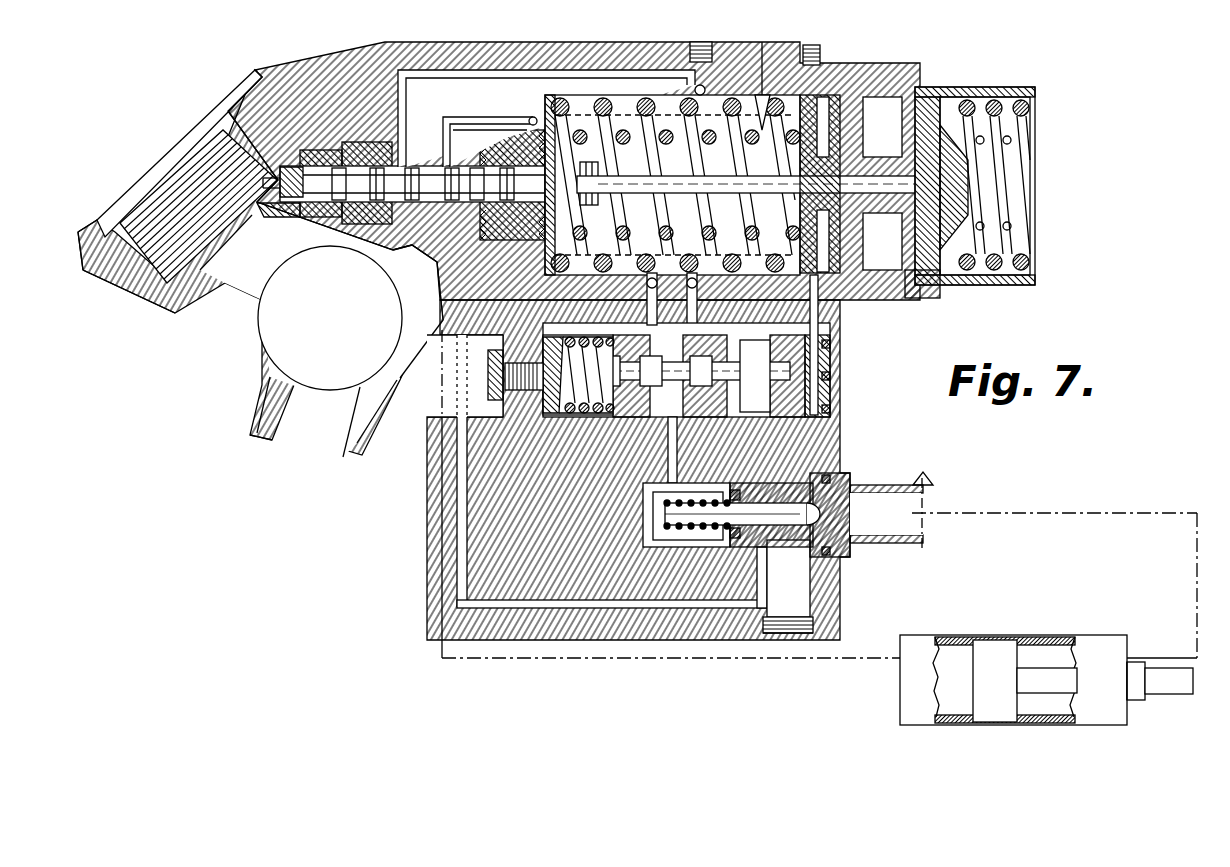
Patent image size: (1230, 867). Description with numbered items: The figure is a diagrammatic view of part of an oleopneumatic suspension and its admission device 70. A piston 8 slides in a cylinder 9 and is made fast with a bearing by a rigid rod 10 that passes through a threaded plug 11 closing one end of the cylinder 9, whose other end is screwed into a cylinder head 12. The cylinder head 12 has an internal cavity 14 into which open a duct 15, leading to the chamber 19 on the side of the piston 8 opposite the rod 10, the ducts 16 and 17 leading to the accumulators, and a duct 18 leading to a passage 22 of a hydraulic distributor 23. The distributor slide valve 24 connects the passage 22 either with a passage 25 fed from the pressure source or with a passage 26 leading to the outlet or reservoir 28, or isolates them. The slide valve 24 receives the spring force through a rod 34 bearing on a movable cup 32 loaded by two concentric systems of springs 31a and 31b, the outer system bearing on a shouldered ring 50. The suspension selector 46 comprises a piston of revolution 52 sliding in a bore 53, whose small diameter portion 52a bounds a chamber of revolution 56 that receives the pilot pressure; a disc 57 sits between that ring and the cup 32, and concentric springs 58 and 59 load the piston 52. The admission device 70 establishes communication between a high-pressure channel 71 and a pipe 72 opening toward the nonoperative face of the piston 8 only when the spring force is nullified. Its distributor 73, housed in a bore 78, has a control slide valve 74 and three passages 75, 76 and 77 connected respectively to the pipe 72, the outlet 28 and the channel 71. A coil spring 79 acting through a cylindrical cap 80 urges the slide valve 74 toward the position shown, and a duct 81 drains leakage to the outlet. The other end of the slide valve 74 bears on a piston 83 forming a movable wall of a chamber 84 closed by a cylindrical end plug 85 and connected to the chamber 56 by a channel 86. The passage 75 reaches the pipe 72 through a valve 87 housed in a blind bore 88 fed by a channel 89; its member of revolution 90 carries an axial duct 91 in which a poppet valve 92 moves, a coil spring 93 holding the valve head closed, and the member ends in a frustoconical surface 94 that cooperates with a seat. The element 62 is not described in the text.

The piston 8 is at (1008, 645).
The cylinder 9 is at (912, 640).
The rigid rod 10 is at (1160, 668).
The threaded plug 11 is at (1140, 690).
The cylinder head 12 is at (560, 536).
The internal cavity 14 is at (275, 330).
The duct 15 is at (412, 305).
The duct 16 is at (285, 420).
The duct 17 is at (240, 283).
The duct 18 is at (385, 245).
The chamber 19 is at (968, 687).
The passage 22 is at (452, 212).
The hydraulic distributor 23 is at (405, 152).
The distributor slide valve 24 is at (345, 152).
The passage 25 is at (398, 130).
The passage 26 is at (445, 165).
The outlet or reservoir 28 is at (835, 632).
The system of springs 31a is at (1020, 225).
The system of springs 31b is at (1030, 108).
The movable cup 32 is at (935, 190).
The rod 34 is at (865, 185).
The suspension selector 46 is at (708, 88).
The shouldered ring 50 is at (975, 95).
The piston of revolution 52 is at (825, 62).
The small diameter cylindrical portion 52a is at (910, 275).
The bore 53 is at (764, 100).
The chamber of revolution 56 is at (880, 154).
The disc 57 is at (925, 95).
The inner spring 58 is at (640, 100).
The outer spring 59 is at (618, 102).
The adjusting screw 62 is at (560, 375).
The admission device 70 is at (625, 420).
The channel 71 is at (705, 62).
The pipe 72 is at (925, 486).
The distributor 73 is at (735, 417).
The control slide valve 74 is at (650, 417).
The passage 75 is at (705, 417).
The passage 76 is at (645, 350).
The passage 77 is at (720, 355).
The bore 78 is at (790, 337).
The coil spring 79 is at (553, 415).
The cylindrical cap 80 is at (585, 415).
The duct 81 is at (555, 330).
The piston 83 is at (830, 383).
The chamber 84 is at (830, 410).
The cylindrical end plug 85 is at (830, 352).
The channel 86 is at (815, 300).
The valve 87 is at (728, 547).
The blind bore 88 is at (668, 547).
The channel 89 is at (677, 466).
The member of revolution 90 is at (812, 490).
The axial duct 91 is at (780, 547).
The poppet valve 92 is at (805, 515).
The coil spring 93 is at (663, 513).
The frustoconical surface 94 is at (788, 586).